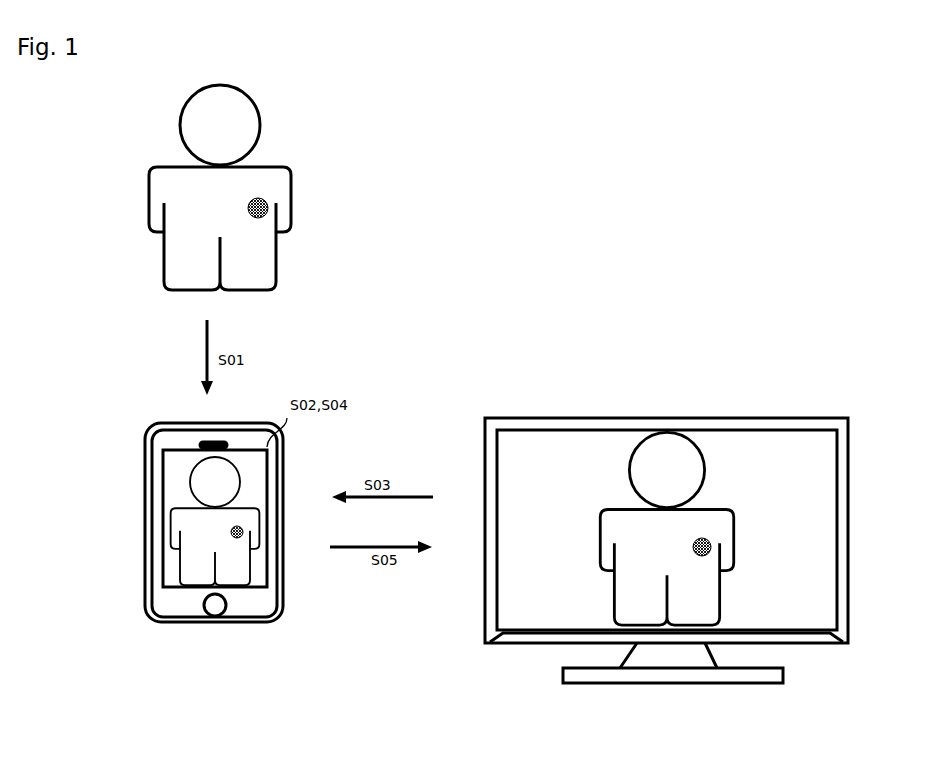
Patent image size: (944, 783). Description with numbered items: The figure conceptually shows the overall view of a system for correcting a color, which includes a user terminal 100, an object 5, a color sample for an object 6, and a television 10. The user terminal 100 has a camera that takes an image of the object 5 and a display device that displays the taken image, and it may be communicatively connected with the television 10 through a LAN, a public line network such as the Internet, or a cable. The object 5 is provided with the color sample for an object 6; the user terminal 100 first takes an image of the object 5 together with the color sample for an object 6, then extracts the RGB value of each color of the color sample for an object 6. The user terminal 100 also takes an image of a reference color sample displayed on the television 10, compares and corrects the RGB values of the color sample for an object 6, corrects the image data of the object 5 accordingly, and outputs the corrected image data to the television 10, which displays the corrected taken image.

The object 5 is at (247, 118).
The color sample for an object 6 is at (261, 199).
The television 10 is at (755, 442).
The user terminal 100 is at (153, 485).